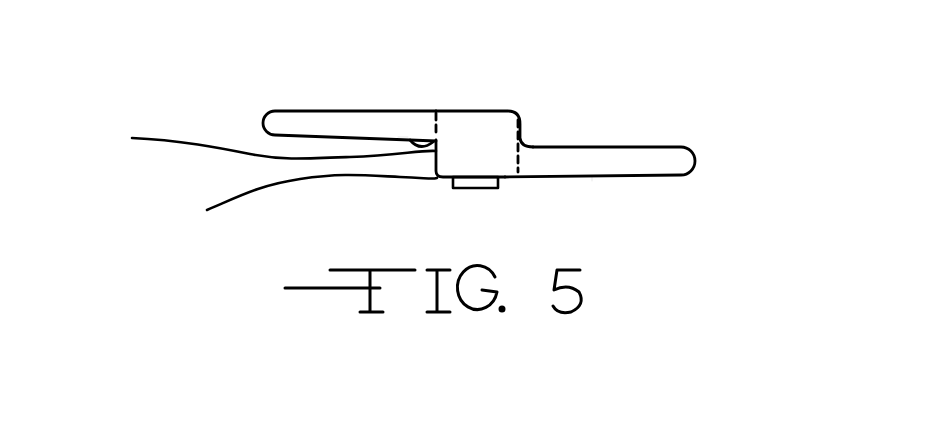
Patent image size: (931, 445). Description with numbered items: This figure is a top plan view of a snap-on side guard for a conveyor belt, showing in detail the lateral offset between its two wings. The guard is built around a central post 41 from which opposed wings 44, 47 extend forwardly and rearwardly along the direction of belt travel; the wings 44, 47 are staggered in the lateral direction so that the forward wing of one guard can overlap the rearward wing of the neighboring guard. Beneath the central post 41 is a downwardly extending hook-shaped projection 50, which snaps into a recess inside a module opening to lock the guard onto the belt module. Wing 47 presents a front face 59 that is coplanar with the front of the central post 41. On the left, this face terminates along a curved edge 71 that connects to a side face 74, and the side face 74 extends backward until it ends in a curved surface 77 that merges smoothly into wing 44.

The central post 41 is at (483, 127).
The wing 44 is at (285, 118).
The wing 47 is at (670, 156).
The hook-shaped projection 50 is at (478, 188).
The front face 59 is at (592, 182).
The curved edge 71 is at (297, 207).
The side face 74 is at (256, 142).
The curved surface 77 is at (402, 137).